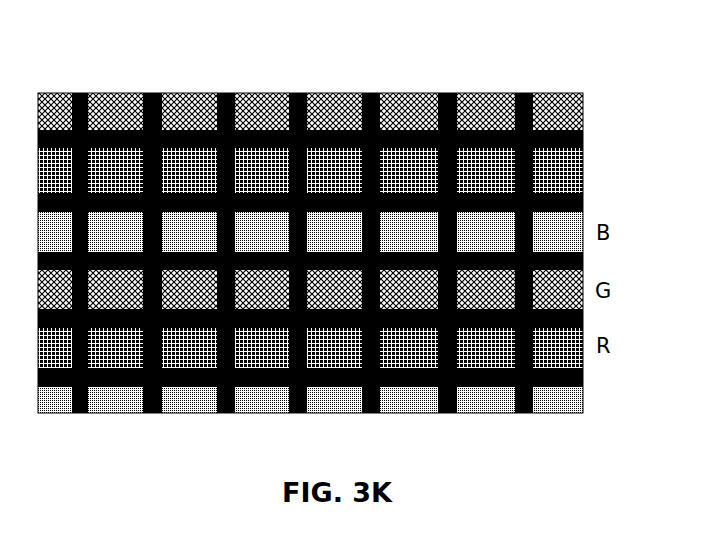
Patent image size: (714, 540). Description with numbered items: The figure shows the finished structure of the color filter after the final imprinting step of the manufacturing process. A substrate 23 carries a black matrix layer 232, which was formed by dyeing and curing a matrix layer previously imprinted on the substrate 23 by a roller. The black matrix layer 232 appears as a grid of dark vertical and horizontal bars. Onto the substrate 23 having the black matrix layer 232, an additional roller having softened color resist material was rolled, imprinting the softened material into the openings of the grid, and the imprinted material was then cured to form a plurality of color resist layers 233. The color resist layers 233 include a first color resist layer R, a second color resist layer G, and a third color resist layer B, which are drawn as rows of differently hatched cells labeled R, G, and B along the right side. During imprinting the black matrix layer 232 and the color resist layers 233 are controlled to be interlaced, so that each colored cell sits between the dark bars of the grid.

The substrate 23 is at (310, 212).
The black matrix (BM) layer 232 is at (373, 92).
The color resist layers 233 is at (487, 92).